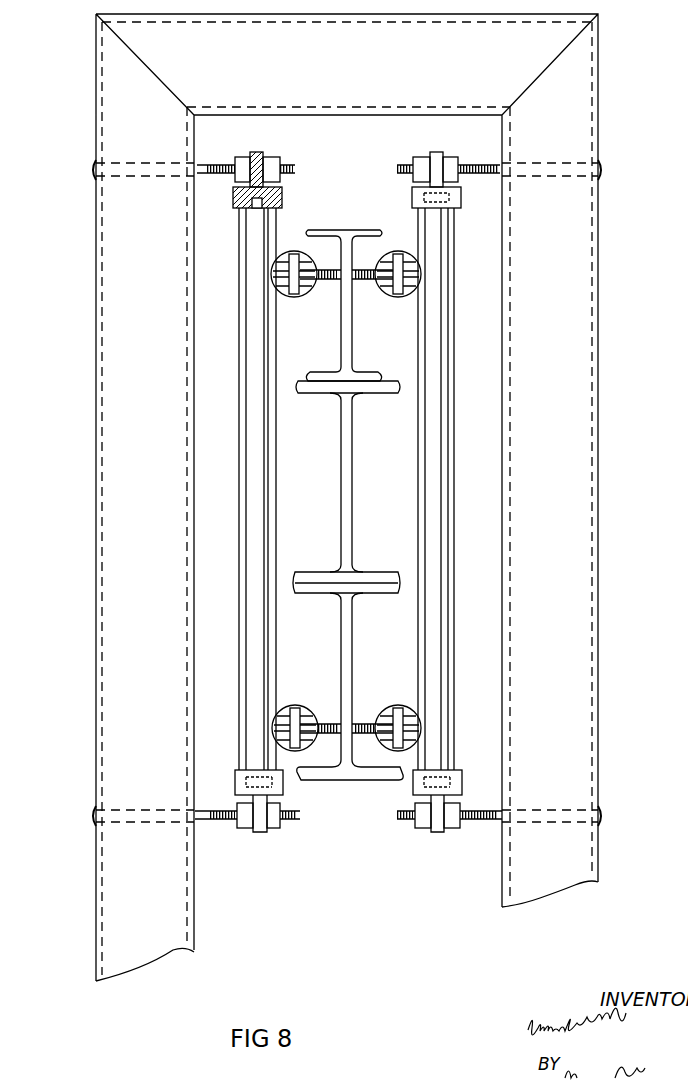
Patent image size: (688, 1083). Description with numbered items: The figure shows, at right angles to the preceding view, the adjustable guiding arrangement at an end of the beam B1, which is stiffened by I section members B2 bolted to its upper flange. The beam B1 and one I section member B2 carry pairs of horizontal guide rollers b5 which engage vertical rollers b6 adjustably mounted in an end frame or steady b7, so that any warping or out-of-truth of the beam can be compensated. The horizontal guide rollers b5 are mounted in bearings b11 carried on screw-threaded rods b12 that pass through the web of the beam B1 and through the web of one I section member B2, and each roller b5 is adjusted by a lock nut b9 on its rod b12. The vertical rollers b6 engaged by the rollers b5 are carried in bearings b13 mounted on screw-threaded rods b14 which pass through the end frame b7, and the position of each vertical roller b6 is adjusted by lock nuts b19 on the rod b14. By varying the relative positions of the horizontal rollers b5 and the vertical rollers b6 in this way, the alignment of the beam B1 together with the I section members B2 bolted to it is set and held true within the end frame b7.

The end frame b7 is at (130, 653).
The vertical roller b6 is at (255, 483).
The bearing b13 is at (257, 152).
The lock nut b19 is at (273, 158).
The screw-threaded rod b14 is at (212, 167).
The bearing b11 is at (290, 252).
The horizontal guide roller b5 is at (414, 255).
The lock nut b9 is at (307, 283).
The screw-threaded rod b12 is at (361, 725).
The I section member B2 is at (352, 332).
The beam B1 is at (351, 675).